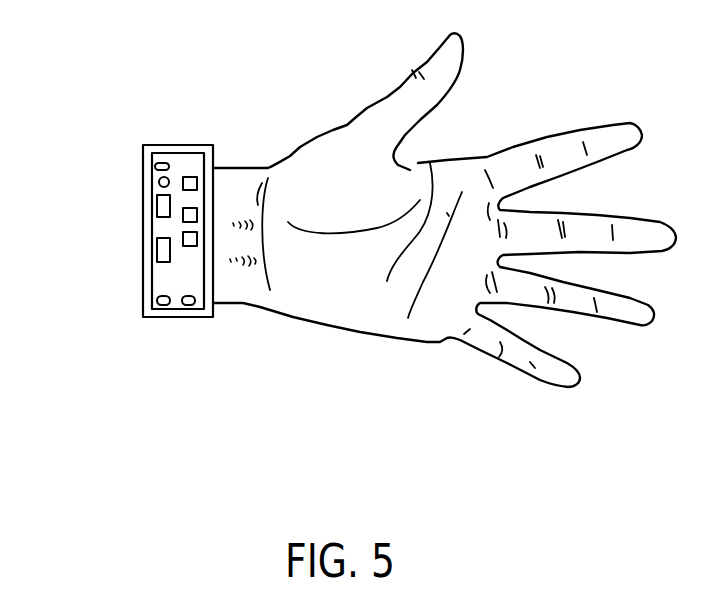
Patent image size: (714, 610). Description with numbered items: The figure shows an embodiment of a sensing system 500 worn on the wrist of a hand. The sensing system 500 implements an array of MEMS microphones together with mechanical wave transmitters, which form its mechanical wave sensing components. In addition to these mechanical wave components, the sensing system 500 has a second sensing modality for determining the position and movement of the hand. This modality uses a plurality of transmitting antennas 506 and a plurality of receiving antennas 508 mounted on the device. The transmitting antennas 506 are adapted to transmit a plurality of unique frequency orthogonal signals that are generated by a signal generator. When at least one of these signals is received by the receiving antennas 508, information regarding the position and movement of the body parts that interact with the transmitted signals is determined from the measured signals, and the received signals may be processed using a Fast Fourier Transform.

The sensing system 500 is at (90, 96).
The transmitting antennas 506 is at (158, 182).
The receiving antennas 508 is at (188, 305).